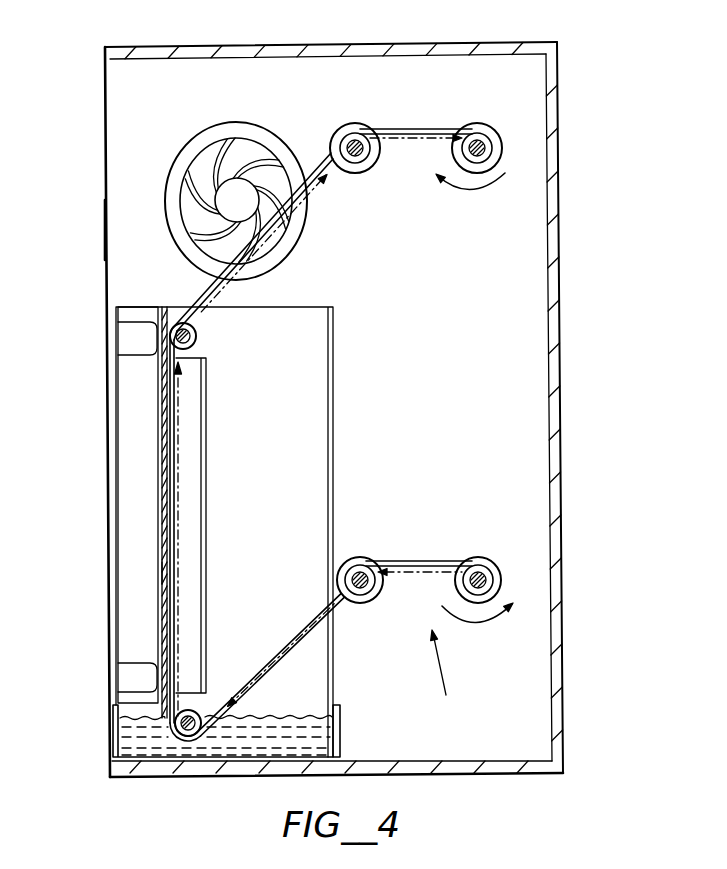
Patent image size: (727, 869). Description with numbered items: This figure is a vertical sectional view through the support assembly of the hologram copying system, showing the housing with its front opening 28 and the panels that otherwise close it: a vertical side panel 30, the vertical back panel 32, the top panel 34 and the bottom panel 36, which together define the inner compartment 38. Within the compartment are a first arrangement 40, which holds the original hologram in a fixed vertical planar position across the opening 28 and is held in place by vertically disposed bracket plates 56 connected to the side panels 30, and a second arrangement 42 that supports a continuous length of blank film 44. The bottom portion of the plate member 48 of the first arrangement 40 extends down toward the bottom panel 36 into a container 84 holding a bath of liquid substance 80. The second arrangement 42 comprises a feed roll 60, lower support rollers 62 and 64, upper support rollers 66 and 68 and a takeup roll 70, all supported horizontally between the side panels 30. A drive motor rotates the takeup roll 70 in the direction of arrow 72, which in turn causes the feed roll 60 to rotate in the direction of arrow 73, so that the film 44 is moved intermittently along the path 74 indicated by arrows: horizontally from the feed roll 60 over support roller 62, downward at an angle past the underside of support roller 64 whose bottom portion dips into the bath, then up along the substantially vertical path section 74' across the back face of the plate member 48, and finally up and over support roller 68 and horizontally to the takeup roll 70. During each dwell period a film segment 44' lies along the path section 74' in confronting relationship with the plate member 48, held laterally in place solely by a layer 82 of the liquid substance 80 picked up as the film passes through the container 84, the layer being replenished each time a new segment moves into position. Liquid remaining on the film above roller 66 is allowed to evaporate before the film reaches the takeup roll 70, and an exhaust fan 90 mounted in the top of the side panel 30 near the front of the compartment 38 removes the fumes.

The front opening 28 is at (106, 156).
The vertical side panel 30 is at (514, 294).
The vertical back panel 32 is at (552, 360).
The top panel 34 is at (440, 50).
The bottom panel 36 is at (470, 764).
The inner compartment 38 is at (122, 234).
The first arrangement 40 is at (153, 510).
The second arrangement 42 is at (448, 677).
The film 44 is at (321, 435).
The film segment 44' is at (213, 529).
The plate member 48 is at (155, 307).
The bracket plate 56 is at (308, 318).
The feed roll 60 is at (485, 558).
The lower support roller 62 is at (363, 558).
The lower support roller 64 is at (200, 708).
The upper support roller 66 is at (198, 336).
The upper support roller 68 is at (360, 128).
The takeup roll 70 is at (481, 129).
The arrow 72 is at (470, 193).
The arrow 73 is at (480, 624).
The path 74 is at (282, 654).
The path section 74' is at (218, 540).
The liquid substance 80 is at (228, 743).
The layer 82 is at (168, 572).
The container 84 is at (338, 740).
The exhaust fan 90 is at (207, 142).